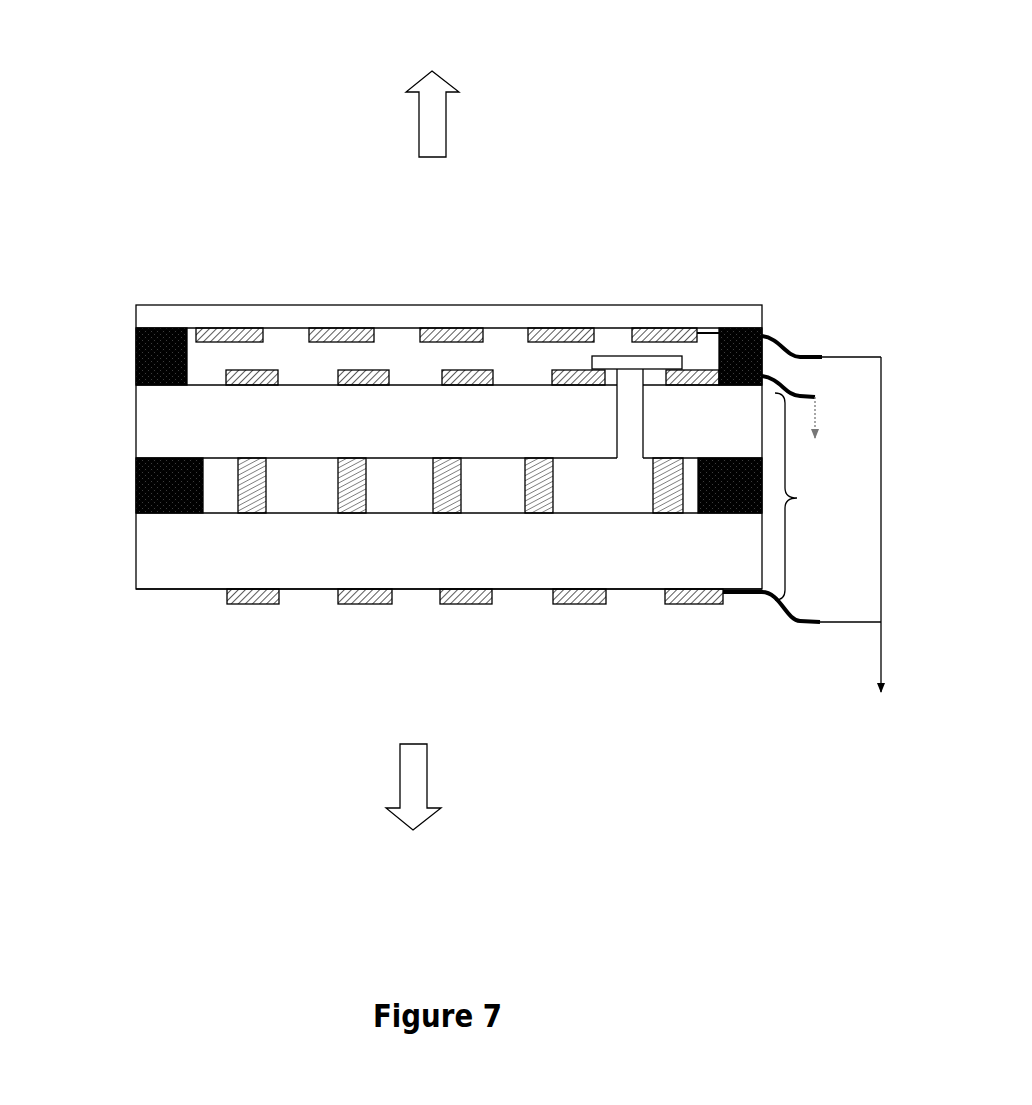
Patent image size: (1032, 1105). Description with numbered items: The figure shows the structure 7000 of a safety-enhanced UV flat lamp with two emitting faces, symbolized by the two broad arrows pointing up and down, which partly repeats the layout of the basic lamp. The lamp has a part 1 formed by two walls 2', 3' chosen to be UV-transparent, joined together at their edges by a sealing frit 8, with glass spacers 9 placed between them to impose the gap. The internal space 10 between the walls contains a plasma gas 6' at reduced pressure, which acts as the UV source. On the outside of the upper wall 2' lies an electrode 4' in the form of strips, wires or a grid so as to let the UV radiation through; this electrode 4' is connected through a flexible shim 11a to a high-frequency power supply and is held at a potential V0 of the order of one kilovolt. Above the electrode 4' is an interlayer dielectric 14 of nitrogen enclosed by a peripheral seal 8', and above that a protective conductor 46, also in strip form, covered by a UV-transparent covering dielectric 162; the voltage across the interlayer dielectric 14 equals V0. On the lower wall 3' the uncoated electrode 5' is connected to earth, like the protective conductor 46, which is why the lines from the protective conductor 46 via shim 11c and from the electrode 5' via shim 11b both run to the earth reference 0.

The structure 7000 is at (665, 130).
The covering dielectric 162 is at (251, 323).
The interlayer dielectric 14 is at (202, 357).
The protective conductor 46 is at (562, 328).
The electrode 4' is at (472, 312).
The peripheral seal 8' is at (412, 343).
The wall 2' is at (410, 426).
The sealing frit 8 is at (428, 479).
The glass spacers 9 is at (245, 493).
The wall 3' is at (431, 584).
The internal space 10 is at (595, 492).
The plasma gas 6' is at (636, 578).
The electrode 5' is at (507, 648).
The upper lead wire 11c is at (770, 342).
The flexible shim 11a is at (797, 393).
The lower lead wire 11b is at (800, 617).
The potential V0 is at (832, 434).
The ground reference line 0 is at (875, 554).
The part 1 is at (799, 496).